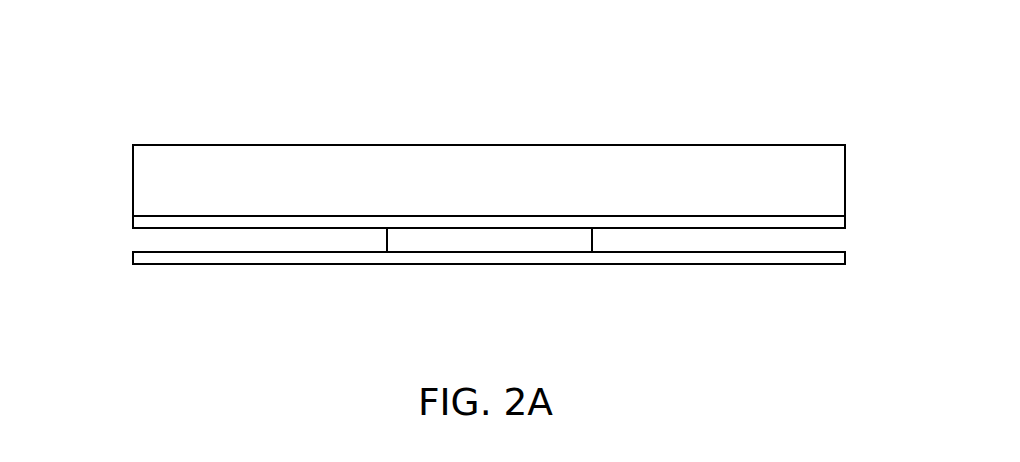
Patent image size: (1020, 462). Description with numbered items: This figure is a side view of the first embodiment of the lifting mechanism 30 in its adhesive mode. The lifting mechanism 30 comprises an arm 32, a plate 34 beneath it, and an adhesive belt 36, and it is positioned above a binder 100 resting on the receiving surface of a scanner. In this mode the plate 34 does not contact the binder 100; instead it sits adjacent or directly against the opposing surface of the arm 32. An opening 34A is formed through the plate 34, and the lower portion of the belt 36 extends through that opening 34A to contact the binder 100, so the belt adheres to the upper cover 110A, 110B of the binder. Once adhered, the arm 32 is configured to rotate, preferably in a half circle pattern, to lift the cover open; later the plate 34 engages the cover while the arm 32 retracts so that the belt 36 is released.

The lifting mechanism 30 is at (145, 80).
The arm 32 is at (846, 180).
The plate 34 is at (846, 222).
The opening 34A is at (365, 228).
The adhesive belt 36 is at (592, 238).
The binder 100 is at (148, 265).
The top surface of plate 110A is at (145, 251).
The bottom surface of plate 110B is at (240, 265).